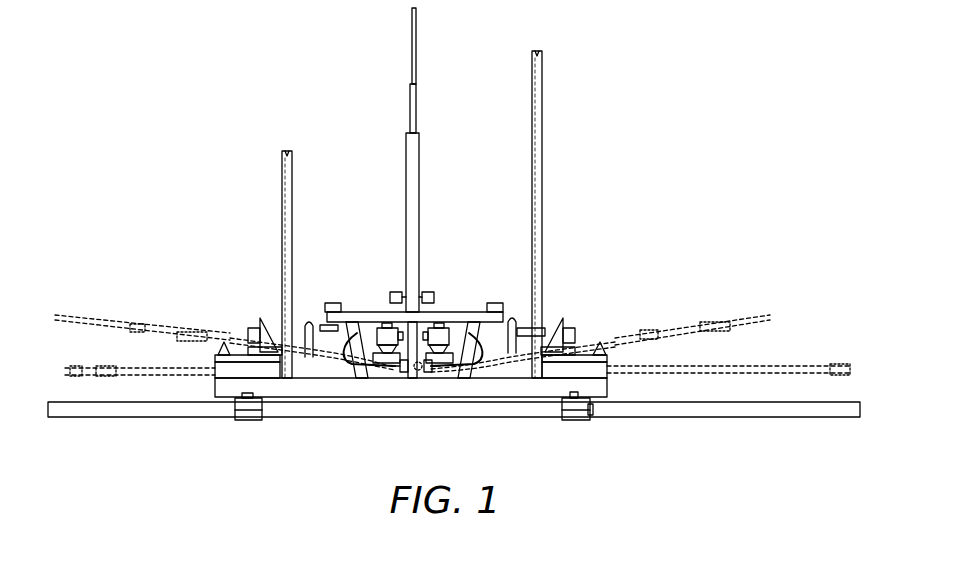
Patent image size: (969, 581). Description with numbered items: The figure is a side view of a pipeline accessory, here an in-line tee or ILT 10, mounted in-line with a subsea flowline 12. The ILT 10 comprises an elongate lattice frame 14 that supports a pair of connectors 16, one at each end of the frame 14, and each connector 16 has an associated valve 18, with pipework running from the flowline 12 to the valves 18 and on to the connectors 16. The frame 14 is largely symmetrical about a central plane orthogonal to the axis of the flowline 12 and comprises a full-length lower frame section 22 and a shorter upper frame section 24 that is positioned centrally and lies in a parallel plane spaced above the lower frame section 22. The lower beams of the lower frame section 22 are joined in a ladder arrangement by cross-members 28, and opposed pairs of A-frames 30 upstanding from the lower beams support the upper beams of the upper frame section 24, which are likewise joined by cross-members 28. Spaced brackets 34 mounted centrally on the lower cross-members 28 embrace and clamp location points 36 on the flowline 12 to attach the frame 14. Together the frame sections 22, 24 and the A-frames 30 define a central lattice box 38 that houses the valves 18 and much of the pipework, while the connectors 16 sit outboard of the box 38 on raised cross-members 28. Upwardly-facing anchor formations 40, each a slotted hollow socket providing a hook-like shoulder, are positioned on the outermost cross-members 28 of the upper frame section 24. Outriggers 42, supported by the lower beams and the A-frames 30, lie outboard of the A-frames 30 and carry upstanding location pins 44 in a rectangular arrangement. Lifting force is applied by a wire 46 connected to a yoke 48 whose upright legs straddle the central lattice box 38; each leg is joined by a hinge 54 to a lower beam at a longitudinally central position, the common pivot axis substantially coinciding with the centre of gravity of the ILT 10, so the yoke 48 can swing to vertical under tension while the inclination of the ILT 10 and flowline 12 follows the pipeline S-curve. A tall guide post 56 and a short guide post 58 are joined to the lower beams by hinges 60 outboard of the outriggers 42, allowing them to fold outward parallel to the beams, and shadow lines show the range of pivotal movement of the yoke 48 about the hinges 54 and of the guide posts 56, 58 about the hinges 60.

The ILT 10 is at (608, 261).
The subsea flowline 12 is at (790, 405).
The elongate lattice frame 14 is at (355, 292).
The connectors 16 is at (264, 318).
The valve 18 is at (440, 323).
The lower frame section 22 is at (232, 387).
The upper frame section 24 is at (392, 293).
The cross-members 28 is at (268, 360).
The A-frames 30 is at (350, 365).
The brackets 34 is at (250, 422).
The location points 36 is at (592, 414).
The central lattice box 38 is at (420, 372).
The anchor formations 40 is at (334, 303).
The outriggers 42 is at (320, 378).
The location pins 44 is at (308, 318).
The wire 46 is at (416, 33).
The yoke 48 is at (393, 142).
The hinges 54 is at (404, 372).
The tall guide post 56 is at (543, 130).
The short guide post 58 is at (281, 178).
The hinges 60 is at (290, 380).